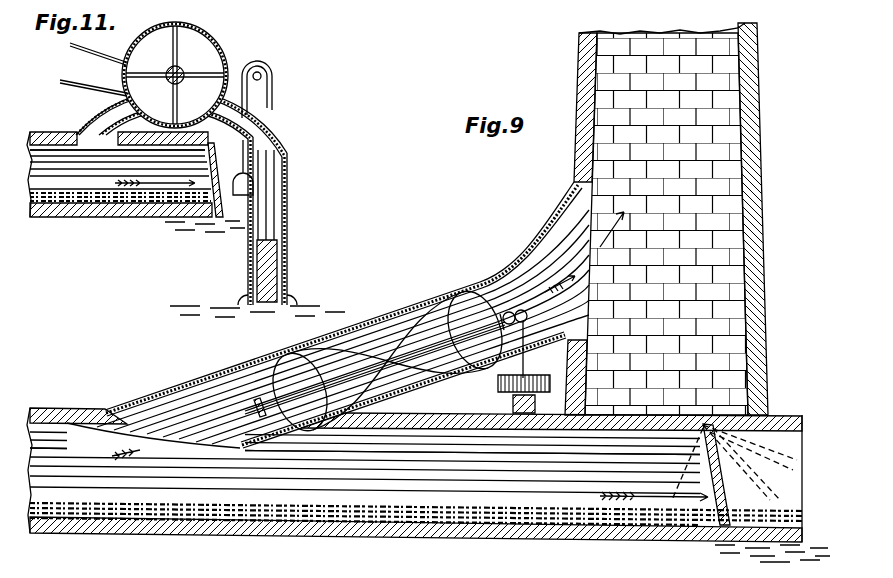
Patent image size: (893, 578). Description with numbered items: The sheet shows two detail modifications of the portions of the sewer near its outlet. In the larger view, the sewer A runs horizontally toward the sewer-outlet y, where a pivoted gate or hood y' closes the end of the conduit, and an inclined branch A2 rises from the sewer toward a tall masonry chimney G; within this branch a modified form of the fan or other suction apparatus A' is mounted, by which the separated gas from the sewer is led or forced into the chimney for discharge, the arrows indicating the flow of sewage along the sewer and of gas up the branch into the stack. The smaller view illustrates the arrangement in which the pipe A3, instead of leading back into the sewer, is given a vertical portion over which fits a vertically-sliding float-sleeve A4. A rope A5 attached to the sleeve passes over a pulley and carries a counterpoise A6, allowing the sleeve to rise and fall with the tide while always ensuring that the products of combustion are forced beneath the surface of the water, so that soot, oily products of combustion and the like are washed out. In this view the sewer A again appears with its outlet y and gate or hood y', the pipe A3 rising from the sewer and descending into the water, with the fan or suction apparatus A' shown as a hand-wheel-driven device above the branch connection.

In FIG. 11, the sewer A is at (136, 182).
In FIG. 9, the sewer A is at (428, 485).
In FIG. 11, the fan or other suction apparatus A' is at (144, 75).
In FIG. 9, the fan or other suction apparatus A' is at (397, 361).
In FIG. 11, the branch pipe / inclined duct A2 is at (181, 123).
In FIG. 9, the branch pipe / inclined duct A2 is at (328, 315).
In FIG. 11, the pipe A3 is at (274, 221).
In FIG. 11, the float-sleeve A4 is at (257, 278).
In FIG. 11, the rope A5 is at (270, 89).
In FIG. 11, the counterpoise A6 is at (250, 184).
In FIG. 11, the sewer-outlet y is at (117, 162).
In FIG. 9, the sewer-outlet y is at (365, 461).
In FIG. 11, the gate or hood y' is at (219, 180).
In FIG. 9, the gate or hood y' is at (734, 474).
In FIG. 9, the chimney stack G is at (676, 219).